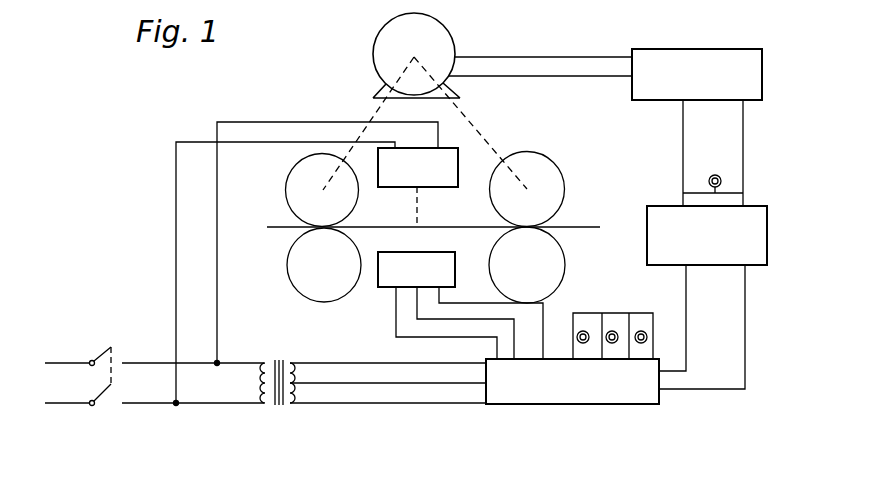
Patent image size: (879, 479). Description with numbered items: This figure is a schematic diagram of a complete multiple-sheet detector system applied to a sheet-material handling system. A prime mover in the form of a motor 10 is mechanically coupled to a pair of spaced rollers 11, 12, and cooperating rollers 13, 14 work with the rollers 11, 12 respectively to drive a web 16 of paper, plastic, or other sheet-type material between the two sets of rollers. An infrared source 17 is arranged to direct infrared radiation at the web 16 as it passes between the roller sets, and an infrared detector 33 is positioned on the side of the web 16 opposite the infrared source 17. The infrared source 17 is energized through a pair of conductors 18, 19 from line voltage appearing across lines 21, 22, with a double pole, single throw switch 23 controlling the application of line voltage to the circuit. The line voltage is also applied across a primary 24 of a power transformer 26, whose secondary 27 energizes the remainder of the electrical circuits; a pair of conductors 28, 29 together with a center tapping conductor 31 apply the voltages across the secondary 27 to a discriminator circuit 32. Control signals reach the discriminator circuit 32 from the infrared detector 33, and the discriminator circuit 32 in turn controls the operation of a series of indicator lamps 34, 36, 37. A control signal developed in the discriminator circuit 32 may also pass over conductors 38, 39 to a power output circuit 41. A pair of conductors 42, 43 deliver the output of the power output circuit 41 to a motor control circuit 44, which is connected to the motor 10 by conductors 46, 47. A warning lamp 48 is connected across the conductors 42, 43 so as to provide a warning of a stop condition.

The motor 10 is at (452, 28).
The roller 11 is at (297, 185).
The roller 12 is at (549, 170).
The roller 13 is at (324, 265).
The roller 14 is at (561, 263).
The web 16 is at (605, 214).
The infrared source 17 is at (447, 192).
The conductor 18 is at (177, 232).
The conductor 19 is at (217, 220).
The line 21 is at (74, 335).
The line 22 is at (62, 405).
The double pole, single throw switch 23 is at (102, 350).
The primary 24 is at (262, 385).
The power transformer 26 is at (279, 356).
The secondary 27 is at (294, 392).
The conductor 28 is at (395, 362).
The conductor 29 is at (425, 404).
The center tapping conductor 31 is at (386, 384).
The discriminator circuit 32 is at (609, 407).
The infrared detector 33 is at (376, 285).
The indicator lamp 34 is at (584, 331).
The indicator lamp 36 is at (613, 331).
The indicator lamp 37 is at (648, 334).
The conductor 38 is at (686, 282).
The conductor 39 is at (746, 301).
The power output circuit 41 is at (770, 225).
The conductor 42 is at (683, 134).
The conductor 43 is at (745, 131).
The motor control circuit 44 is at (748, 28).
The conductor 46 is at (582, 56).
The conductor 47 is at (545, 77).
The warning lamp 48 is at (717, 176).